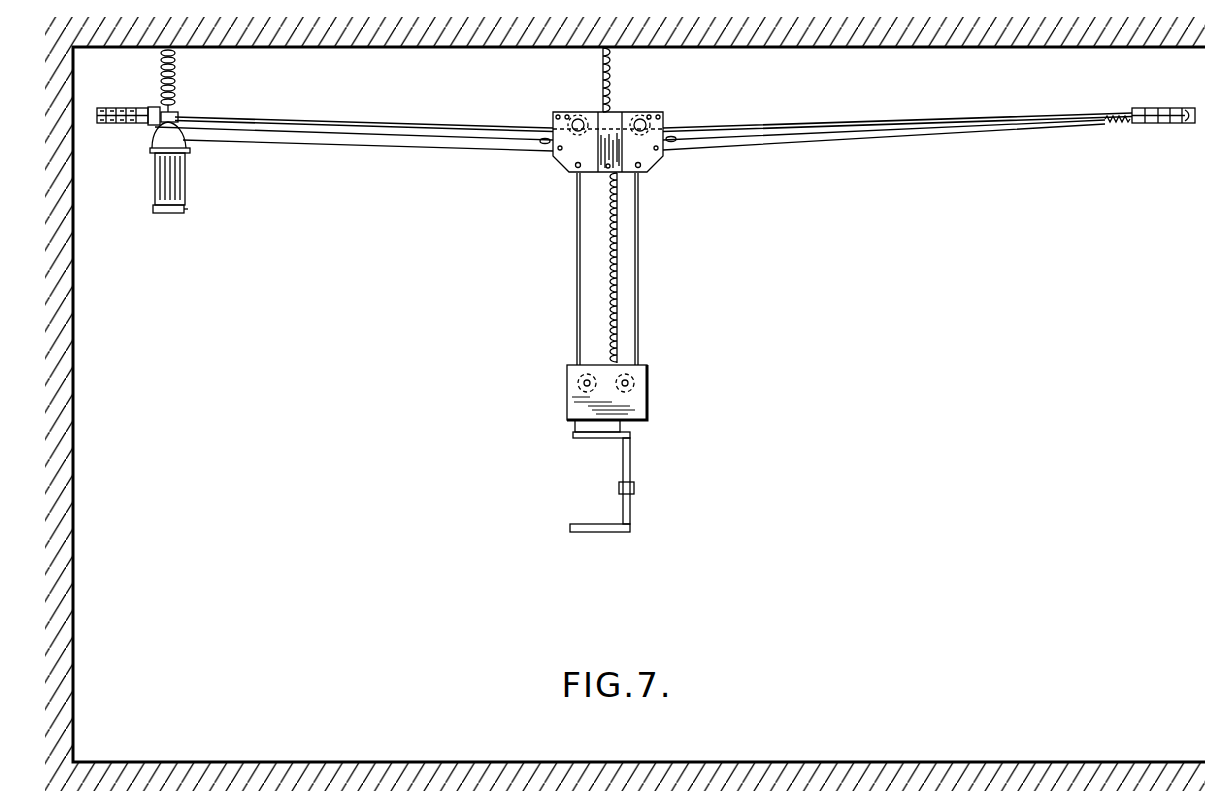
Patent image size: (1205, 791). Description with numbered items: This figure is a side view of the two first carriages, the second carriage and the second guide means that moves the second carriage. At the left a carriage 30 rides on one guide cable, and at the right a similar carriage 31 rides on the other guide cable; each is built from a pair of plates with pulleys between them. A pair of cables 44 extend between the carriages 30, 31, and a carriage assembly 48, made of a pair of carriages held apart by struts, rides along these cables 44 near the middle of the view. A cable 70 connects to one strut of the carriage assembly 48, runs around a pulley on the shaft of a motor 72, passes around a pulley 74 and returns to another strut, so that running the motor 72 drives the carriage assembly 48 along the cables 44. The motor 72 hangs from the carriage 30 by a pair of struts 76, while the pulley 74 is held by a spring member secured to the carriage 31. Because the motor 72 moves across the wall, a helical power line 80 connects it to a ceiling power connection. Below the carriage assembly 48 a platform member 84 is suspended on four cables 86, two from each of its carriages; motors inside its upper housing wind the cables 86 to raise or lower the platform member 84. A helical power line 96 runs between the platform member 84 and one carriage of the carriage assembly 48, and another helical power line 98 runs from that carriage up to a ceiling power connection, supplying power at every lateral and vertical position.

The carriage 30 is at (132, 108).
The carriage 31 is at (1154, 106).
The cables 44 is at (407, 123).
The carriage assembly 48 is at (666, 102).
The cable 70 is at (405, 142).
The motor 72 is at (188, 176).
The pulley 74 is at (1105, 126).
The struts 76 is at (148, 135).
The helical power line 80 is at (172, 70).
The platform member 84 is at (686, 388).
The cables 86 is at (575, 196).
The helical power line 96 is at (618, 278).
The helical power line 98 is at (618, 74).